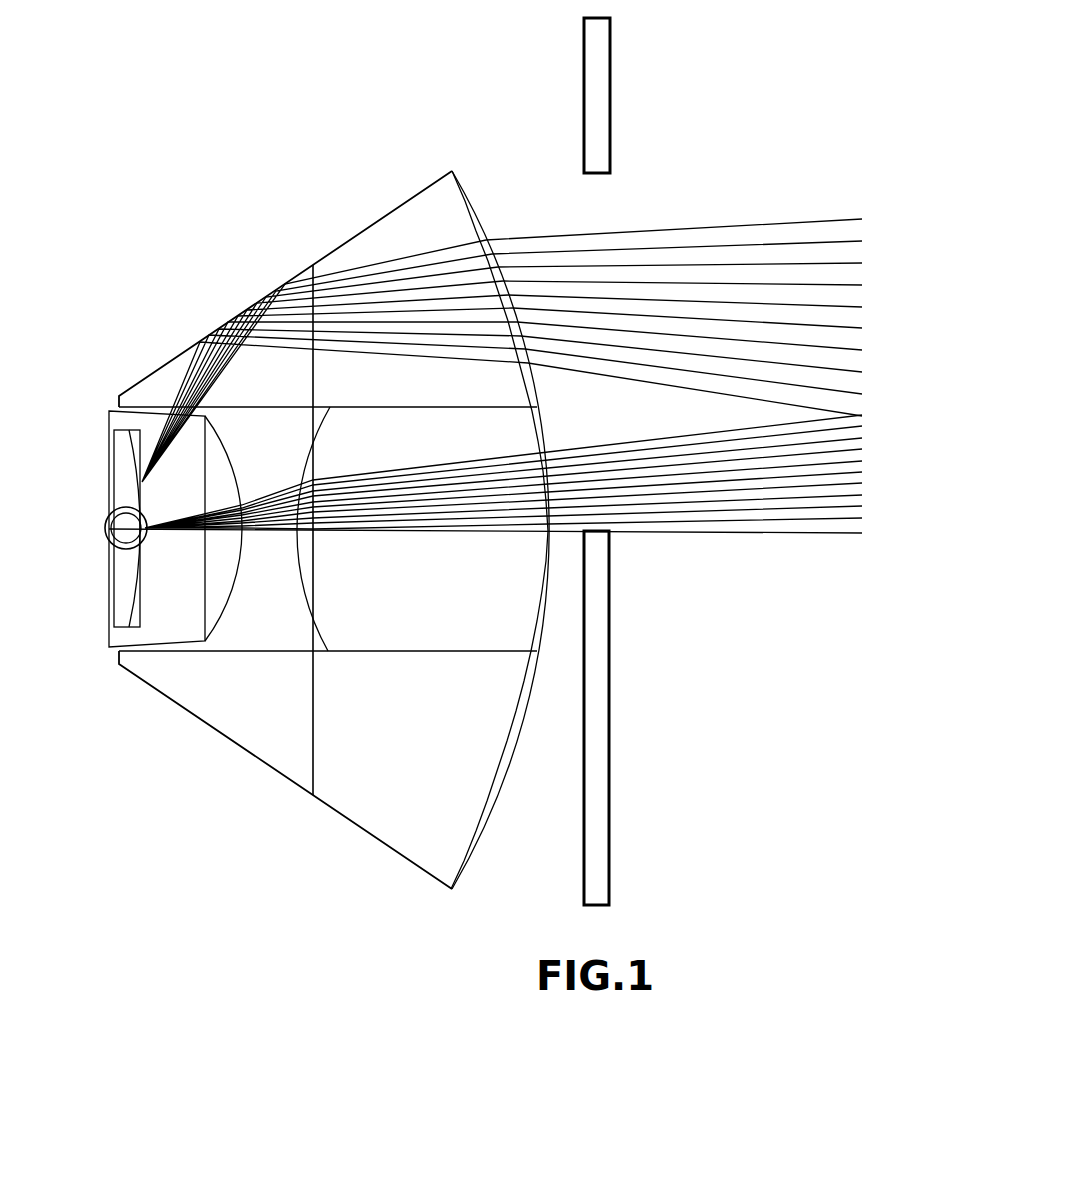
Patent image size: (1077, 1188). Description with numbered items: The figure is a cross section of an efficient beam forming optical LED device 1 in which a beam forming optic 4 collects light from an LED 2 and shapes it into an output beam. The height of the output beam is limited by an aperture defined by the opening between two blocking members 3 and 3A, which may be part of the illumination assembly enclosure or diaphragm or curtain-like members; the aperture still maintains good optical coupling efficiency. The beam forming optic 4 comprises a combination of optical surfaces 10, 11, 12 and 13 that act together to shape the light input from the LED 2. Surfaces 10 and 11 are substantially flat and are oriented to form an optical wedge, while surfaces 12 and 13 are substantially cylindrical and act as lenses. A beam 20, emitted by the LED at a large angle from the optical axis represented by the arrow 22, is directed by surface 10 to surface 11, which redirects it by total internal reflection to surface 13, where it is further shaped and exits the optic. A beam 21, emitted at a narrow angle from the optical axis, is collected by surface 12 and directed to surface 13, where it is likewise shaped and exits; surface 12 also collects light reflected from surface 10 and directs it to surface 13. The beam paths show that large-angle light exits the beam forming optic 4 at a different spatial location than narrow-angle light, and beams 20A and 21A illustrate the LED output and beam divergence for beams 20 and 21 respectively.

The efficient beam forming optical LED device 1 is at (198, 243).
The LED 2 is at (108, 590).
The blocking member 3 is at (612, 113).
The blocking member 3A is at (610, 800).
The beam forming optic 4 is at (400, 210).
The optical surface 10 is at (297, 409).
The optical surface 11 is at (180, 354).
The optical surface 12 is at (322, 637).
The optical surface 13 is at (497, 800).
The beam 20 is at (367, 353).
The beam 20A is at (763, 219).
The beam 21 is at (228, 533).
The beam 21A is at (748, 536).
The arrow 22 is at (76, 507).